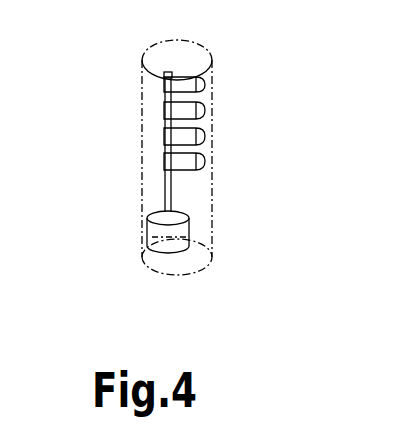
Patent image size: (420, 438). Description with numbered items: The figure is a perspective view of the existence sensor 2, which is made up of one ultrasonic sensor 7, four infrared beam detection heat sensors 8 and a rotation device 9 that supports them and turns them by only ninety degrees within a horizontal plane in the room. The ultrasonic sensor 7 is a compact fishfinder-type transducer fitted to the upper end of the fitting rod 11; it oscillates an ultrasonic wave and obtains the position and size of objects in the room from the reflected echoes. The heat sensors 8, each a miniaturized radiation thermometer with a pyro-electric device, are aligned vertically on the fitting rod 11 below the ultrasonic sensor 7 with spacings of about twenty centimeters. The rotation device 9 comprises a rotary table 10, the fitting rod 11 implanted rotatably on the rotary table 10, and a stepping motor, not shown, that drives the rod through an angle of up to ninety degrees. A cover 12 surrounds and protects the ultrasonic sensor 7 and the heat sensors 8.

The existence sensor 2 is at (218, 64).
The ultrasonic sensor 7 is at (206, 89).
The heat sensor 8 is at (207, 133).
The rotation device 9 is at (188, 238).
The rotary table 10 is at (172, 240).
The fitting rod 11 is at (159, 213).
The cover 12 is at (141, 134).